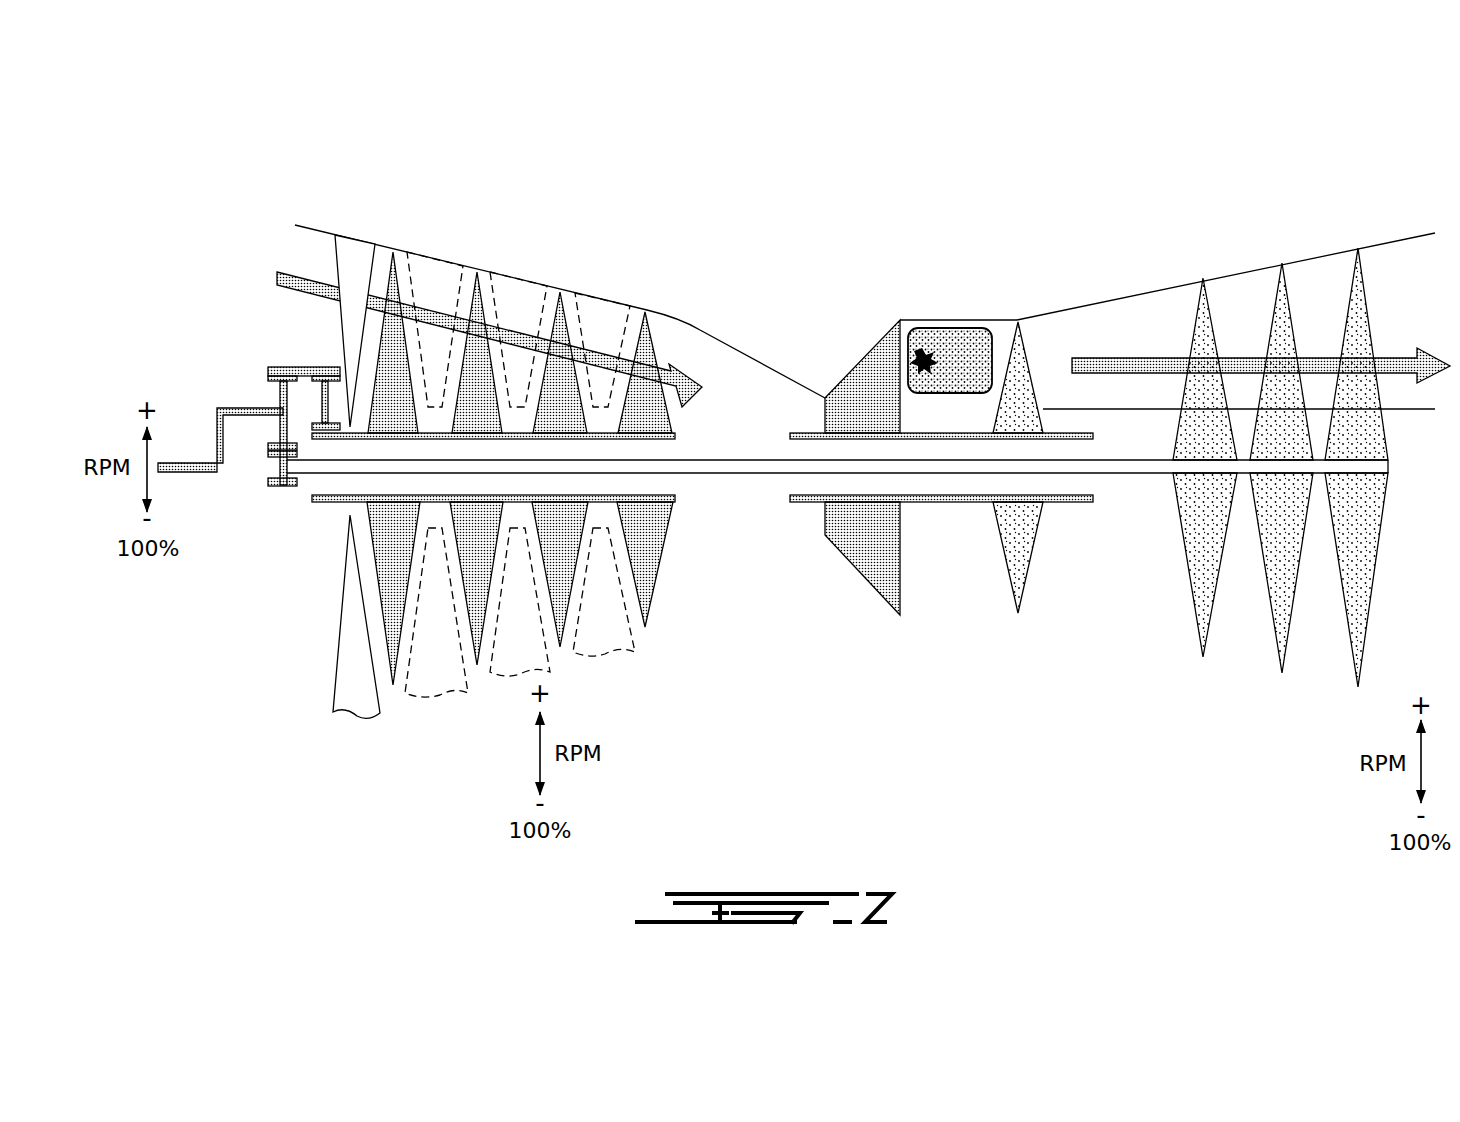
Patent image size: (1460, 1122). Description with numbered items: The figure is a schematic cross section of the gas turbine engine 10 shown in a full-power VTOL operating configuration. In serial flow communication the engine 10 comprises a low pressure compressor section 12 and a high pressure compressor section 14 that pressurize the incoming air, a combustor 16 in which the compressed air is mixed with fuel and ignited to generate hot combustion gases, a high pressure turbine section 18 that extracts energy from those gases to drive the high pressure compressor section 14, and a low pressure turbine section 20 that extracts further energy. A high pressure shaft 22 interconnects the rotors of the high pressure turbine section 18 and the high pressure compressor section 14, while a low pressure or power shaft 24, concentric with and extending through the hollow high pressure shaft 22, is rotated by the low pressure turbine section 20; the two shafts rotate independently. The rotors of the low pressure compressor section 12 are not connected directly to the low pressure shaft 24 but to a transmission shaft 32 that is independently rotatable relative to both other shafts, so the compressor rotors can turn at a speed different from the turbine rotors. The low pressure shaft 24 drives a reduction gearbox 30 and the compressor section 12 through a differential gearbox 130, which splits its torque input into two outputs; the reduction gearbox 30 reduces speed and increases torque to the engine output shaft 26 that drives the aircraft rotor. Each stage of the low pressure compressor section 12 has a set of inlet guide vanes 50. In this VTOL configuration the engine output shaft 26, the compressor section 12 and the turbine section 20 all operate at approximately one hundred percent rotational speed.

The gas turbine engine 10 is at (742, 200).
The low pressure compressor section 12 is at (495, 250).
The high pressure compressor section 14 is at (880, 322).
The combustor 16 is at (948, 340).
The high pressure turbine section 18 is at (1020, 332).
The low pressure turbine section 20 is at (1283, 245).
The high pressure shaft 22 is at (950, 503).
The low pressure shaft 24 is at (1132, 475).
The engine output shaft 26 is at (188, 460).
The reduction gearbox 30 is at (243, 380).
The differential gearbox 130 is at (243, 334).
The transmission shaft 32 is at (325, 503).
The inlet guide vanes 50 is at (433, 270).